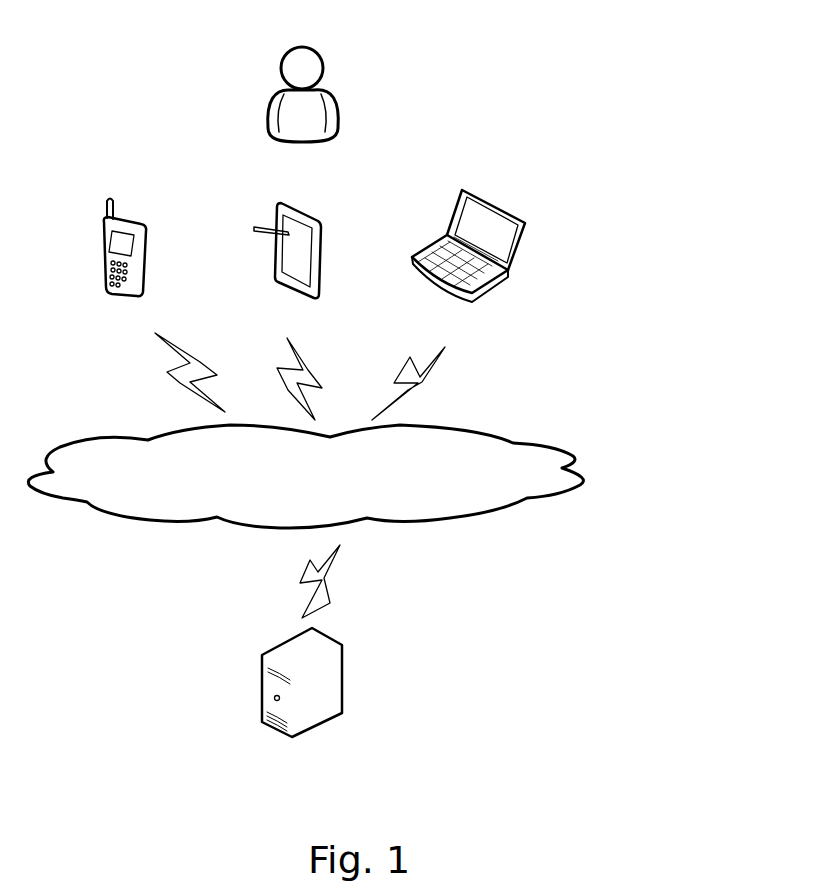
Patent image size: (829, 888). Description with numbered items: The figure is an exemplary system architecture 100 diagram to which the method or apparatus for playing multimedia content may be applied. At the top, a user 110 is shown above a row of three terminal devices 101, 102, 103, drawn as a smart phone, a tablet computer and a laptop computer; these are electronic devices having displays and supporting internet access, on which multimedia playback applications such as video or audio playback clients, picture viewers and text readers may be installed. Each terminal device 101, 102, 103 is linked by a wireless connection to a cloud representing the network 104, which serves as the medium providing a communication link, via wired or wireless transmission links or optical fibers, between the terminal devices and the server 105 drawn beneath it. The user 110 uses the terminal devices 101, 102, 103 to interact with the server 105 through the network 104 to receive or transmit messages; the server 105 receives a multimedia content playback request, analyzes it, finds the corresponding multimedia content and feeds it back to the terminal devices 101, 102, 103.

The system architecture 100 is at (499, 39).
The user 110 is at (303, 114).
The terminal device 101 is at (127, 266).
The terminal device 102 is at (293, 268).
The terminal device 103 is at (468, 261).
The network 104 is at (305, 476).
The server 105 is at (302, 703).